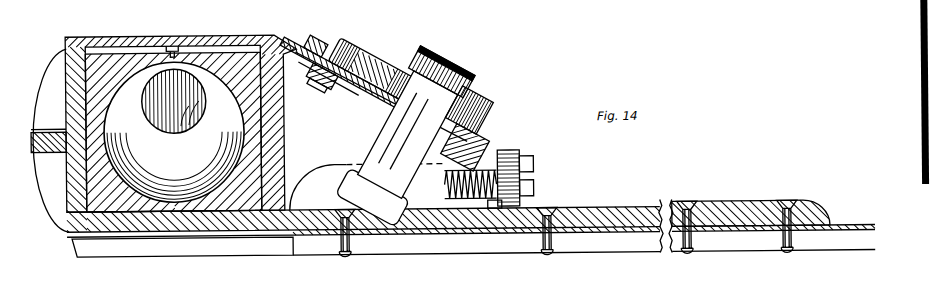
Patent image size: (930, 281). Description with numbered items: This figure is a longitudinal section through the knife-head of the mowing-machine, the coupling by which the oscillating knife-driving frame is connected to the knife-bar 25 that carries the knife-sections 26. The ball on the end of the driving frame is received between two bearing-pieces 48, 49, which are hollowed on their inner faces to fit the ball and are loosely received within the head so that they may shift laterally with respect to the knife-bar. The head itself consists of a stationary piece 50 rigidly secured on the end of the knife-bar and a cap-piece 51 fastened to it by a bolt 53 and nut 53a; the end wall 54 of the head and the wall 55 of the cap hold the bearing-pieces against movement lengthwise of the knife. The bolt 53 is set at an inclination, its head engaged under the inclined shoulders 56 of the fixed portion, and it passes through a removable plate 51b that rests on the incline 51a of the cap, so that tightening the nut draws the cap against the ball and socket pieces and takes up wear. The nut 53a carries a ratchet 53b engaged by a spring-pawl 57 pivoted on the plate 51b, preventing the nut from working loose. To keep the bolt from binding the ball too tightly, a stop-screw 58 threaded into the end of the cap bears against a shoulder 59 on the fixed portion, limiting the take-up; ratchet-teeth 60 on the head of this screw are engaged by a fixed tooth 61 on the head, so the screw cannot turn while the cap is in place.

The knife-bar 25 is at (471, 228).
The knife-sections 26 is at (752, 214).
The bearing-piece 48 is at (114, 200).
The bearing-piece 49 is at (247, 200).
The stationary piece 50 is at (218, 222).
The cap-piece 51 is at (268, 35).
The incline 51a is at (367, 94).
The removable plate 51b is at (314, 38).
The bolt 53 is at (397, 148).
The nut 53a is at (465, 82).
The ratchet 53b is at (486, 128).
The end wall 54 is at (72, 186).
The wall 55 is at (286, 134).
The inclined shoulders 56 is at (350, 168).
The spring-pawl 57 is at (362, 56).
The stop-screw 58 is at (504, 157).
The shoulder 59 is at (525, 177).
The ratchet-teeth 60 is at (528, 188).
The fixed tooth 61 is at (490, 216).